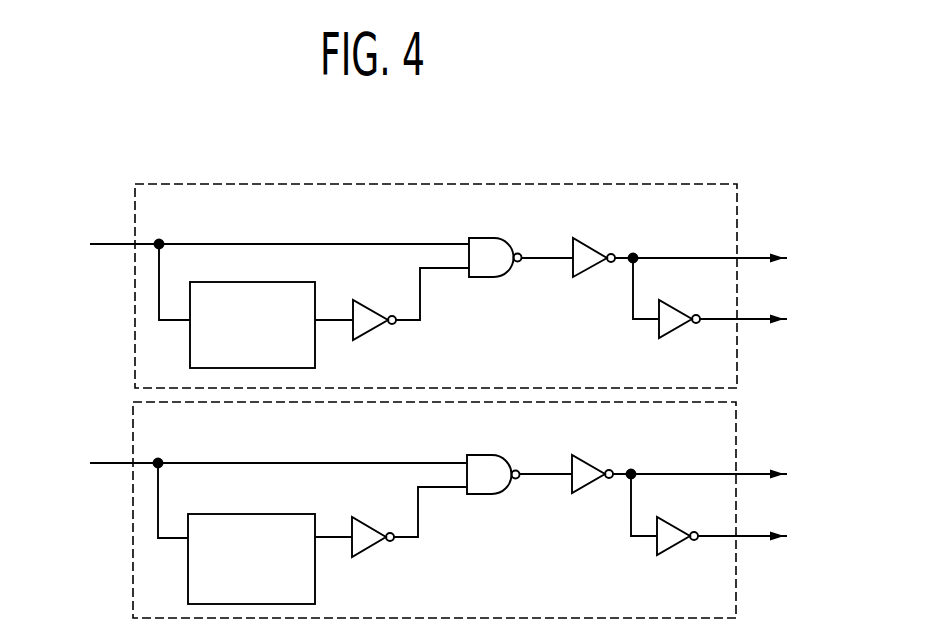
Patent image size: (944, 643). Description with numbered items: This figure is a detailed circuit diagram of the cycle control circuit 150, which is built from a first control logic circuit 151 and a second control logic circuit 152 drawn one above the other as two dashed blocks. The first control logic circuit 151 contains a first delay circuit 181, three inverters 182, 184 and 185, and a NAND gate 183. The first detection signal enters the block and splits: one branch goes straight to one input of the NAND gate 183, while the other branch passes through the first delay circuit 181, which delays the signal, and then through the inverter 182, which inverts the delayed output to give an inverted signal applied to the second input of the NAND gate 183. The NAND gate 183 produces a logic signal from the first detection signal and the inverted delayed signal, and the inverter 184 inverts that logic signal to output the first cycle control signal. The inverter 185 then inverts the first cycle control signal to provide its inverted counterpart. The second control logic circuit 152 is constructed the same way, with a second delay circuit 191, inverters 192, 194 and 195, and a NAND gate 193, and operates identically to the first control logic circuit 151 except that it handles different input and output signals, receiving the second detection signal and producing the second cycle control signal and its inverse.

The cycle control circuit 150 is at (643, 150).
The first control logic circuit 151 is at (737, 207).
The second control logic circuit 152 is at (737, 423).
The first delay circuit 181 is at (249, 282).
The inverter 182 is at (365, 307).
The NAND gate 183 is at (480, 238).
The inverter 184 is at (590, 248).
The inverter 185 is at (678, 311).
The second delay circuit 191 is at (250, 514).
The inverter 192 is at (364, 523).
The NAND gate 193 is at (478, 455).
The inverter 194 is at (589, 464).
The inverter 195 is at (677, 529).